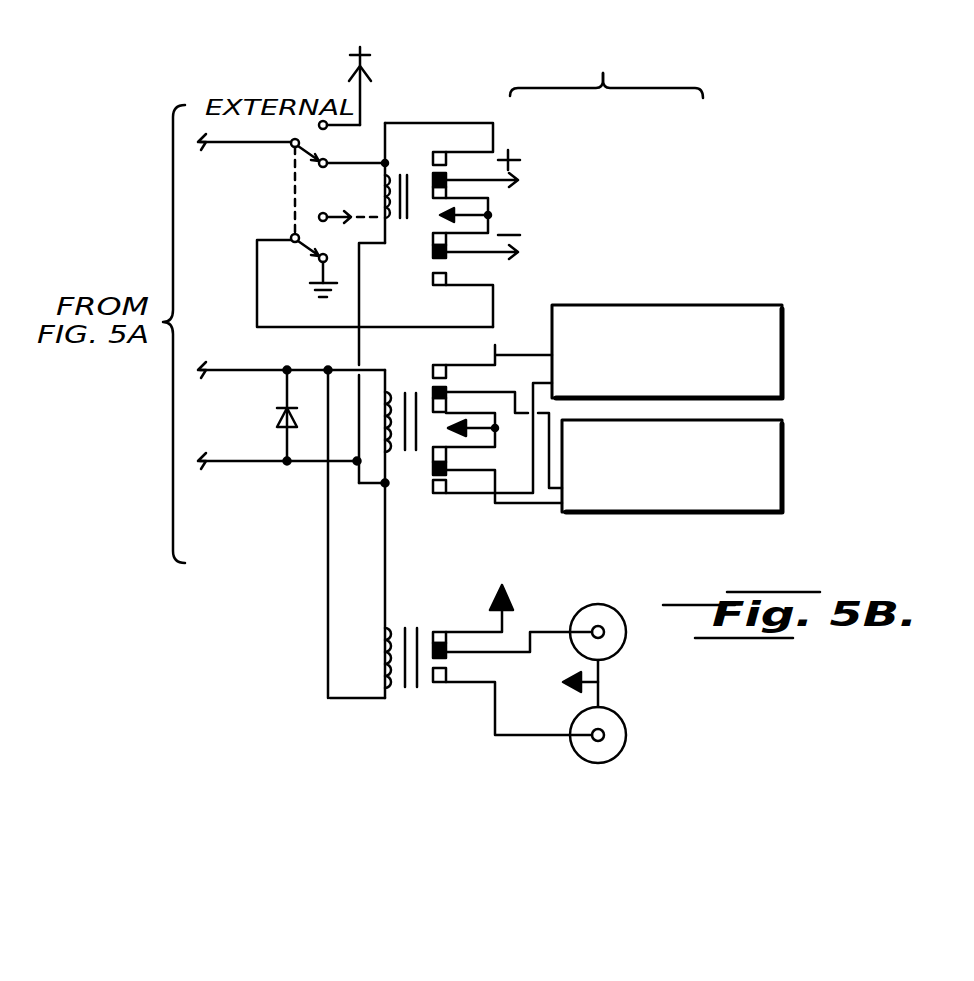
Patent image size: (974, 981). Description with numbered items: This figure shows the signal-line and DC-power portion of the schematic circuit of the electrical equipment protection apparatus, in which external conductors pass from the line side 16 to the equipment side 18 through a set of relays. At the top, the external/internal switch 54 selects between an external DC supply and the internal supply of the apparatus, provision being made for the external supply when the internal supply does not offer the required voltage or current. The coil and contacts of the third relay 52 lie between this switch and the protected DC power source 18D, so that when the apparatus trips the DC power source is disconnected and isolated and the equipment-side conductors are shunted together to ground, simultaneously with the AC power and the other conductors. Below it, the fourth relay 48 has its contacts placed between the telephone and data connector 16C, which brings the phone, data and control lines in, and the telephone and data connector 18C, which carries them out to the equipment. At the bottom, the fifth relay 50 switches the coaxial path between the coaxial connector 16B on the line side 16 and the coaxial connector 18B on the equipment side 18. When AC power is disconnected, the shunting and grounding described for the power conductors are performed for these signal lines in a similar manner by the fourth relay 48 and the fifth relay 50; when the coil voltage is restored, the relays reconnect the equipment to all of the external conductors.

The line side 16 is at (559, 69).
The equipment side 18 is at (653, 70).
The coaxial connector 16B is at (620, 608).
The telephone and data connector 16C is at (782, 313).
The coaxial connector 18B is at (622, 727).
The telephone and data connector 18C is at (782, 437).
The protected DC power source 18D is at (505, 207).
The relay RY4 48 is at (410, 495).
The relay RY5 50 is at (420, 692).
The relay RY3 52 is at (402, 105).
The switch SW3 54 is at (208, 172).